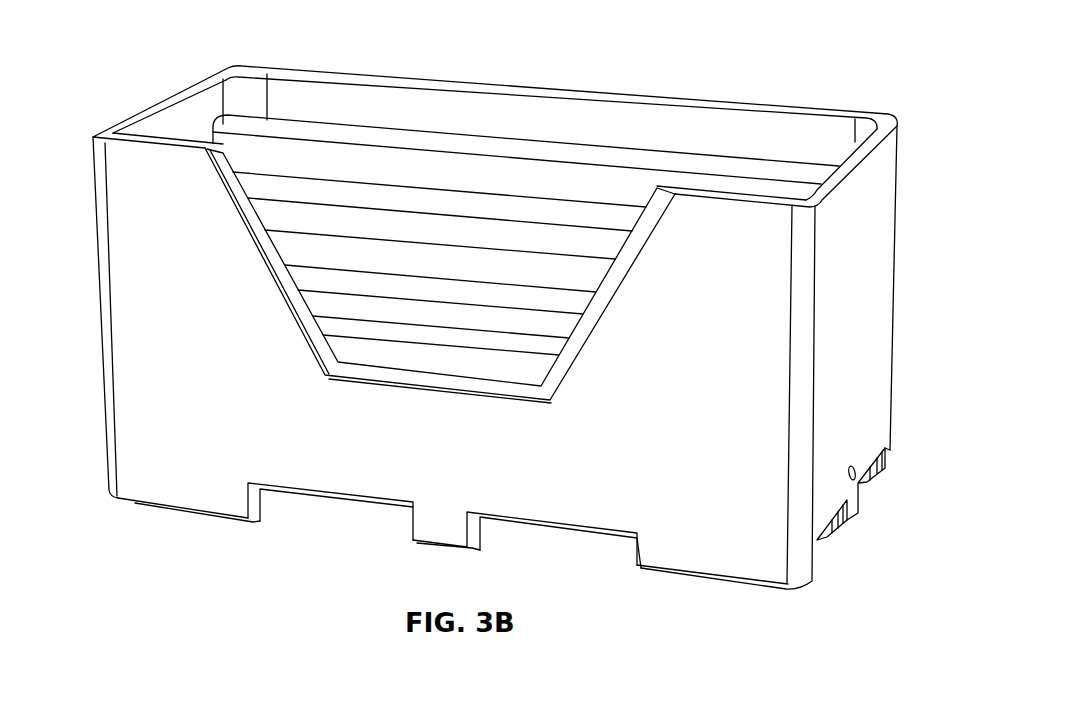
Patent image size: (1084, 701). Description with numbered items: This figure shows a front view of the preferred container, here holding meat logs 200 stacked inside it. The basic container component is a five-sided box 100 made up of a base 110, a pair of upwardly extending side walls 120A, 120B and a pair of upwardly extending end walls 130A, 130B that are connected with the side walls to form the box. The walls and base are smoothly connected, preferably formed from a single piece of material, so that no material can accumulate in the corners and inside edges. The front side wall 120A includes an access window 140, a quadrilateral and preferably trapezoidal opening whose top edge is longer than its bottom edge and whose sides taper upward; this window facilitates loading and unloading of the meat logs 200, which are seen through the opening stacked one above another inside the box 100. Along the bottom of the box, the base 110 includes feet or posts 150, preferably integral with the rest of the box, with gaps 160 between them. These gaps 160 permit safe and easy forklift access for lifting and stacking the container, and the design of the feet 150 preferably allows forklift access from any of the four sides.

The box 100 is at (851, 75).
The base 110 is at (709, 6).
The side wall 120A is at (670, 447).
The side wall 120B is at (382, 64).
The end wall 130A is at (100, 292).
The end wall 130B is at (878, 283).
The access window 140 is at (415, 383).
The feet or posts 150 is at (178, 513).
The gaps 160 is at (318, 512).
The meat logs 200 is at (540, 178).